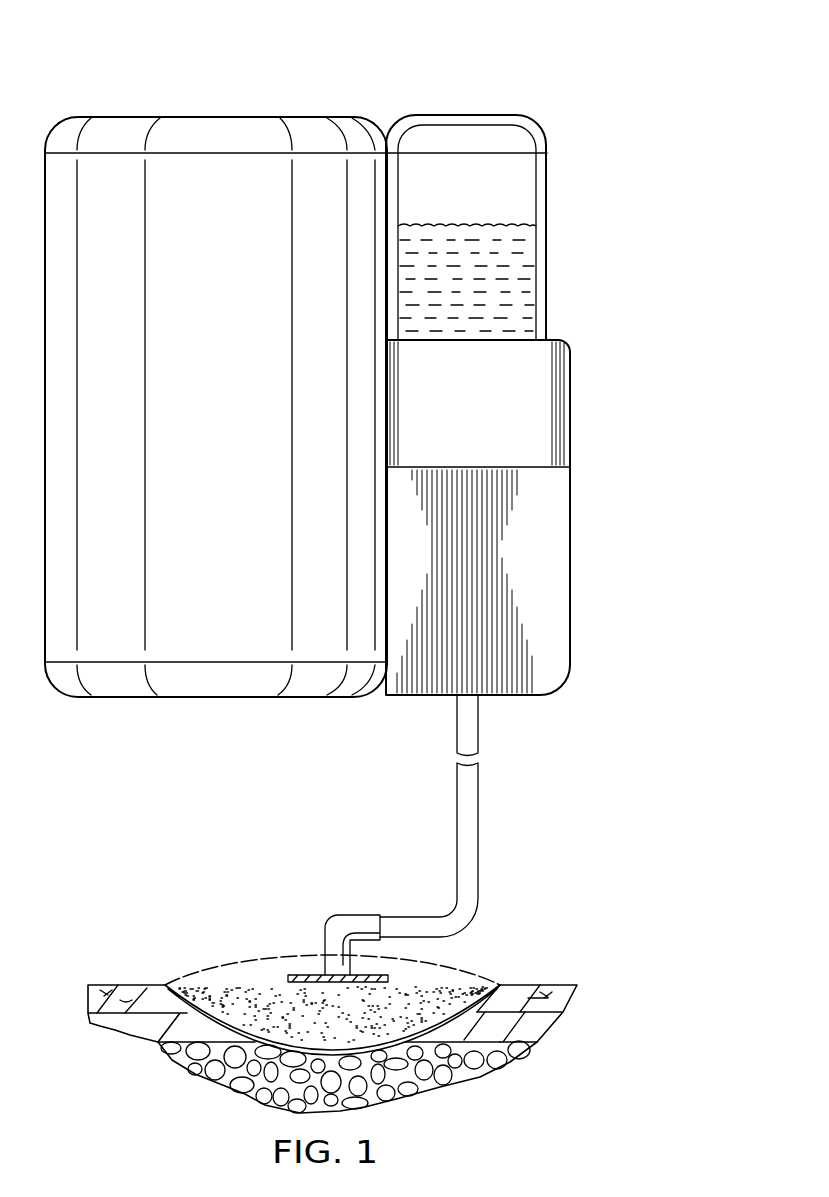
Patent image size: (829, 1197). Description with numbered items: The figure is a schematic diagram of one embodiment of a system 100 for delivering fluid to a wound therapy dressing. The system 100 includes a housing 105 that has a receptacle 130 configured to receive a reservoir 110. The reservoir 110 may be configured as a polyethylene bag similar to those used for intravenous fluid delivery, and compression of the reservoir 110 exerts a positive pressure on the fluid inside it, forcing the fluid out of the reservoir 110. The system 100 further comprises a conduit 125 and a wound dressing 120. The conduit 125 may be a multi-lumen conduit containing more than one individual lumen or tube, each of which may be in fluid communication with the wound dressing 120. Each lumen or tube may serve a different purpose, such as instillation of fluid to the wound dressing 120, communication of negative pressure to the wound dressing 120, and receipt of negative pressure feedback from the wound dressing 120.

The system 100 is at (469, 68).
The housing 105 is at (198, 112).
The reservoir 110 is at (548, 242).
The wound dressing 120 is at (276, 912).
The conduit 125 is at (482, 834).
The receptacle 130 is at (573, 432).